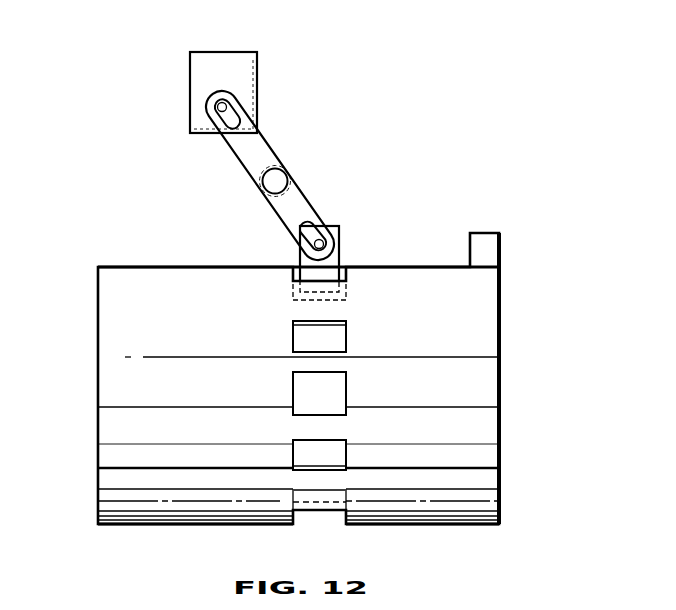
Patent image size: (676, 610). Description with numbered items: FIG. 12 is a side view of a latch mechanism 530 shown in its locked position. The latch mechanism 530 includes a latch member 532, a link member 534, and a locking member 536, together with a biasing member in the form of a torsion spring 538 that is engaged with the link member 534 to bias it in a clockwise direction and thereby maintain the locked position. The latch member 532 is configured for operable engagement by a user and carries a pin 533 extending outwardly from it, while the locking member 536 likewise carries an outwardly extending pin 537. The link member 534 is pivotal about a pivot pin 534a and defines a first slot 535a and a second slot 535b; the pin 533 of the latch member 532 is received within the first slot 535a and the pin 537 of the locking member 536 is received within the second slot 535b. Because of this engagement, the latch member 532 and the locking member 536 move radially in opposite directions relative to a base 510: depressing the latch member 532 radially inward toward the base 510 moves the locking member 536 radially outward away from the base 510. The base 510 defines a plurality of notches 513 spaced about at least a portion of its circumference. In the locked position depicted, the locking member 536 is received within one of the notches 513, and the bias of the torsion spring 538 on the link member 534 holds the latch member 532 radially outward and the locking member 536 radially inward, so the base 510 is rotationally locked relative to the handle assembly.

The base 510 is at (90, 470).
The notches 513 is at (345, 494).
The latch mechanism 530 is at (433, 90).
The latch member 532 is at (222, 70).
The pin 533 is at (218, 108).
The link member 534 is at (258, 156).
The pivot pin 534a is at (299, 176).
The first slot 535a is at (238, 108).
The second slot 535b is at (298, 237).
The locking member 536 is at (327, 265).
The pin 537 is at (328, 232).
The torsion spring 538 is at (258, 173).